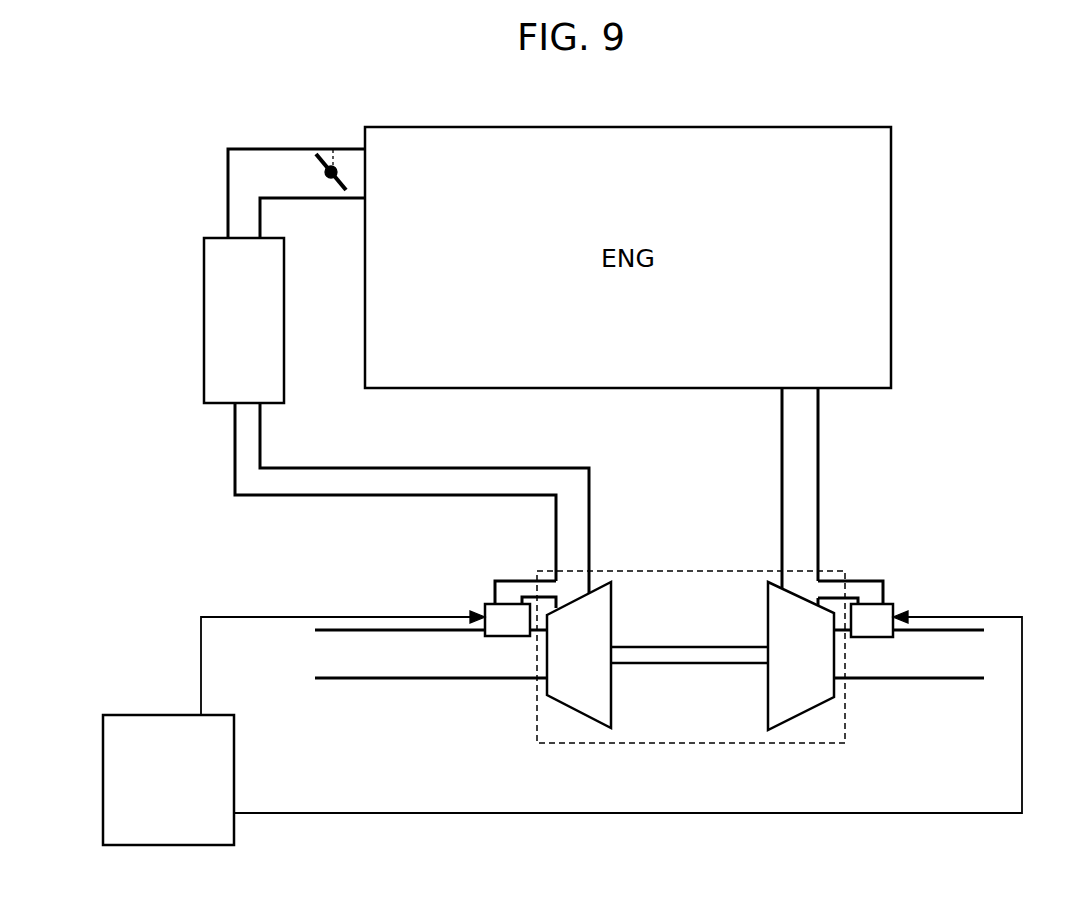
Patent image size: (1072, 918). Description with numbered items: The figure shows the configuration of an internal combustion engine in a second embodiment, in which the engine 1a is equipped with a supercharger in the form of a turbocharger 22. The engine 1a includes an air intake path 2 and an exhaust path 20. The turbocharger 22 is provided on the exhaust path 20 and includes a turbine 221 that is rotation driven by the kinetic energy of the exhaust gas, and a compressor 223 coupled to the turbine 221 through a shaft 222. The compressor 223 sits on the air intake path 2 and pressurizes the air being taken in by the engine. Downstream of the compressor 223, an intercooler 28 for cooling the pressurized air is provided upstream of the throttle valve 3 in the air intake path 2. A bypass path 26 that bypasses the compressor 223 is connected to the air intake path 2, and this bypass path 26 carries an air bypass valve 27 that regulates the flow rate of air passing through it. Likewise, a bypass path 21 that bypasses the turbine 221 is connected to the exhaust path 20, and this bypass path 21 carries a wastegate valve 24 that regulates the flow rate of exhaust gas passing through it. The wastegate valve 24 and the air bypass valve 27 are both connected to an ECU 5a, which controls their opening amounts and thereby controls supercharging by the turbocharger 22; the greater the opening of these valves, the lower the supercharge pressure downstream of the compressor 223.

The engine 1a is at (952, 122).
The air intake path 2 is at (323, 497).
The throttle valve 3 is at (316, 165).
The ECU 5a is at (160, 713).
The exhaust path 20 is at (818, 463).
The bypass path 21 is at (858, 581).
The turbocharger 22 is at (537, 710).
The wastegate valve 24 is at (897, 606).
The bypass path 26 is at (507, 581).
The air bypass valve 27 is at (485, 608).
The intercooler 28 is at (204, 322).
The turbine 221 is at (806, 711).
The shaft 222 is at (687, 645).
The compressor 223 is at (571, 710).